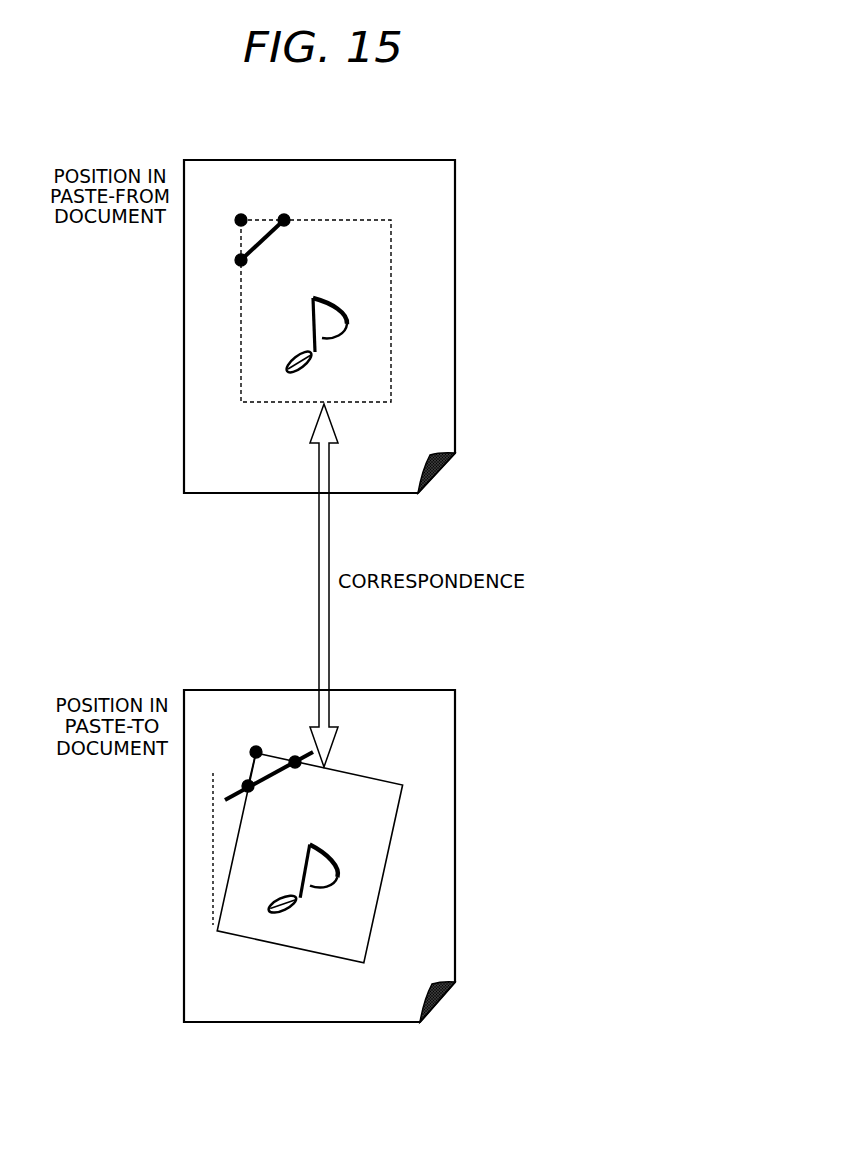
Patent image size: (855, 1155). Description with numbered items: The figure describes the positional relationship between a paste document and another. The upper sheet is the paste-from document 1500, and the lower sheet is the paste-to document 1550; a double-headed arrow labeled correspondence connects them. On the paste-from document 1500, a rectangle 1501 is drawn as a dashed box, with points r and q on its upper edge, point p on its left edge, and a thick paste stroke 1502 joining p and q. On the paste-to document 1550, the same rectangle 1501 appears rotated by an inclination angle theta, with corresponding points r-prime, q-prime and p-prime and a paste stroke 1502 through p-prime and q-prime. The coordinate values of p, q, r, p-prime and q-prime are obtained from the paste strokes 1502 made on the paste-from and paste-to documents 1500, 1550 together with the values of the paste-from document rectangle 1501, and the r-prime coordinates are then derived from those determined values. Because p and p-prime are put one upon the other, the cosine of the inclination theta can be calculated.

The paste-from document 1500 is at (425, 160).
The rectangle 1501 is at (358, 220).
The paste strokes 1502 is at (262, 243).
The paste-to document 1550 is at (425, 690).